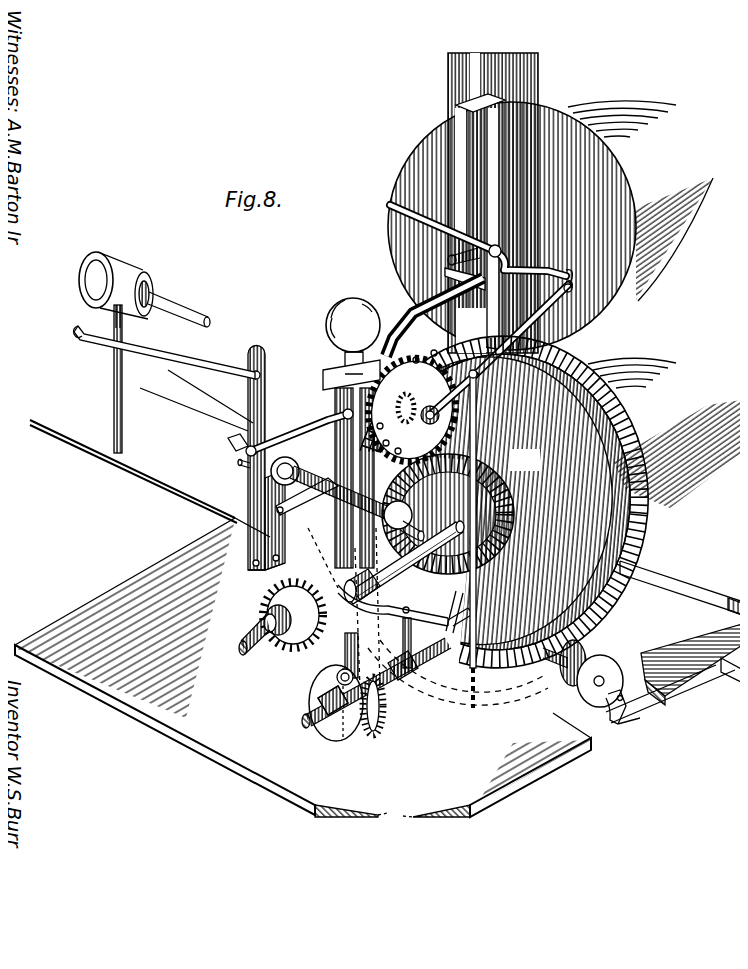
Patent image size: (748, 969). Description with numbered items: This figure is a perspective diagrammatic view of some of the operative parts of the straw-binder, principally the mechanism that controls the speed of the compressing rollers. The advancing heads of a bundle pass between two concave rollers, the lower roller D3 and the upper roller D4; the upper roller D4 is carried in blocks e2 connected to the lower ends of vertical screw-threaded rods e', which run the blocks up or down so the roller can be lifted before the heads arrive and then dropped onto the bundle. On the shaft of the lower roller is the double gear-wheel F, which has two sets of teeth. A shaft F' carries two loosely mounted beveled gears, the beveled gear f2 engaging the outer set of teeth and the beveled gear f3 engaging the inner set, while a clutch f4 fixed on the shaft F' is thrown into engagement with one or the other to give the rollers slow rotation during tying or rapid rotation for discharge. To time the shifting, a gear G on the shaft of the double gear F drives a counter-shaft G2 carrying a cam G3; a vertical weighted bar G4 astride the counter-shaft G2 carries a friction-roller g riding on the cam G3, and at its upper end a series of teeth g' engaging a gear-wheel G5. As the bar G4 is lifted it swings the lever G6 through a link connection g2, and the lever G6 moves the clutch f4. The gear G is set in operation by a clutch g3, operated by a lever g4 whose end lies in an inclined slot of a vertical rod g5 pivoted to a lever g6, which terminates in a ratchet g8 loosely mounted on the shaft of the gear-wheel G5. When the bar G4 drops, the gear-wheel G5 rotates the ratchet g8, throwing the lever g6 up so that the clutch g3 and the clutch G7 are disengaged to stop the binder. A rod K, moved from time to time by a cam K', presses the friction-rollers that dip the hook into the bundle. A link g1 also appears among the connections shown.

The rod K is at (377, 618).
The upper roller D4 is at (550, 225).
The lower roller D3 is at (664, 433).
The vertical screw-threaded rods e' is at (475, 203).
The blocks e2 is at (468, 207).
The pivot link g1 is at (433, 220).
The lever g6 is at (505, 300).
The double gear-wheel F is at (500, 502).
The gear-wheel G5 is at (390, 405).
The ratchet g8 is at (414, 388).
The vertical weighted bar G4 is at (330, 338).
The shaft F' is at (228, 458).
The beveled gear f2 is at (238, 452).
The clutch G7 is at (125, 278).
The lever G6 is at (243, 414).
The link connection g2 is at (292, 410).
The series of teeth g' is at (402, 514).
The beveled gear f3 is at (362, 540).
The clutch f4 is at (330, 524).
The gear G is at (265, 592).
The lever g4 is at (410, 596).
The clutch g3 is at (385, 608).
The vertical rod g5 is at (470, 616).
The cam G3 is at (338, 727).
The counter-shaft G2 is at (308, 704).
The friction-roller g is at (317, 661).
The cam K' is at (584, 692).